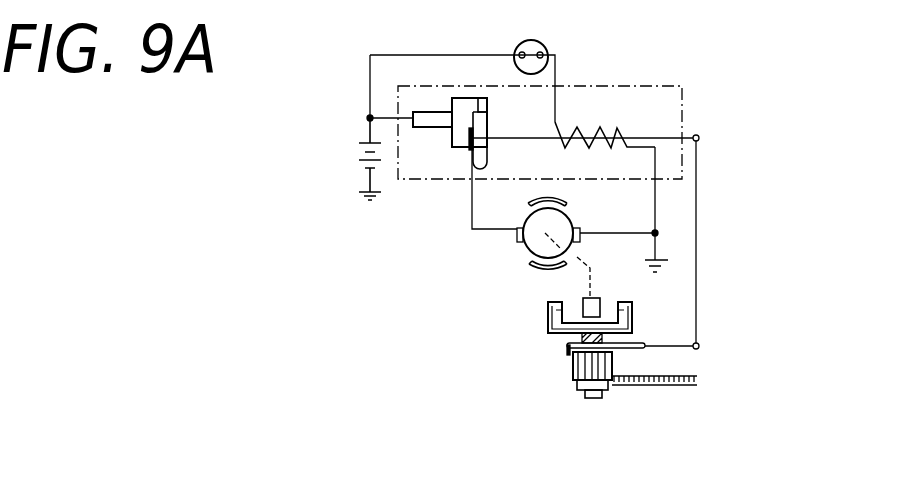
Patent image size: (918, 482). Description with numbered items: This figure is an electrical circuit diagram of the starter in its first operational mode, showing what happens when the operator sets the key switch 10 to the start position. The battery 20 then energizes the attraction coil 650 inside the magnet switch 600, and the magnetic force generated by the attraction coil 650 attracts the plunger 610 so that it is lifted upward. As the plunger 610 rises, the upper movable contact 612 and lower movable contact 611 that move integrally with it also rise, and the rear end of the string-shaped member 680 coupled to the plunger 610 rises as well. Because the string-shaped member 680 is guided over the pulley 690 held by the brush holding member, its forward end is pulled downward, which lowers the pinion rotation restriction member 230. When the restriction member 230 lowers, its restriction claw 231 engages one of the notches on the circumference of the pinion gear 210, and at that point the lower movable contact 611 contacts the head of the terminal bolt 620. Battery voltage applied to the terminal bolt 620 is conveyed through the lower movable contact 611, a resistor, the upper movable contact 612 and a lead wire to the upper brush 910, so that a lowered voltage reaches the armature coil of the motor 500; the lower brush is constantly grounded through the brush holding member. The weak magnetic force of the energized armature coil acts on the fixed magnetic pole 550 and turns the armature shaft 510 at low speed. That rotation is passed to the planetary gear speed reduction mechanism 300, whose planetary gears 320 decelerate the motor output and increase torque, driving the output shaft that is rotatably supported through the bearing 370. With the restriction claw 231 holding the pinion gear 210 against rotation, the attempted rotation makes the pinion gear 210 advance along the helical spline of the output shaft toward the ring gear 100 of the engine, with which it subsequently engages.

The key switch 10 is at (545, 42).
The battery 20 is at (360, 159).
The ring gear 100 is at (673, 384).
The pinion gear 210 is at (612, 362).
The pinion rotation restriction member 230 is at (567, 349).
The restriction claw 231 is at (570, 352).
The planetary gear speed reduction mechanism 300 is at (553, 318).
The planetary gears 320 is at (552, 298).
The bearing 370 is at (700, 343).
The motor 500 is at (524, 248).
The armature shaft 510 is at (600, 303).
The fixed magnetic pole 550 is at (538, 266).
The magnet switch 600 is at (677, 83).
The plunger 610 is at (660, 137).
The lower movable contact 611 is at (483, 98).
The upper movable contact 612 is at (467, 150).
The terminal bolt 620 is at (413, 110).
The attraction coil 650 is at (600, 127).
The string-shaped member 680 is at (700, 208).
The pulley 690 is at (700, 139).
The upper brush 910 is at (472, 229).